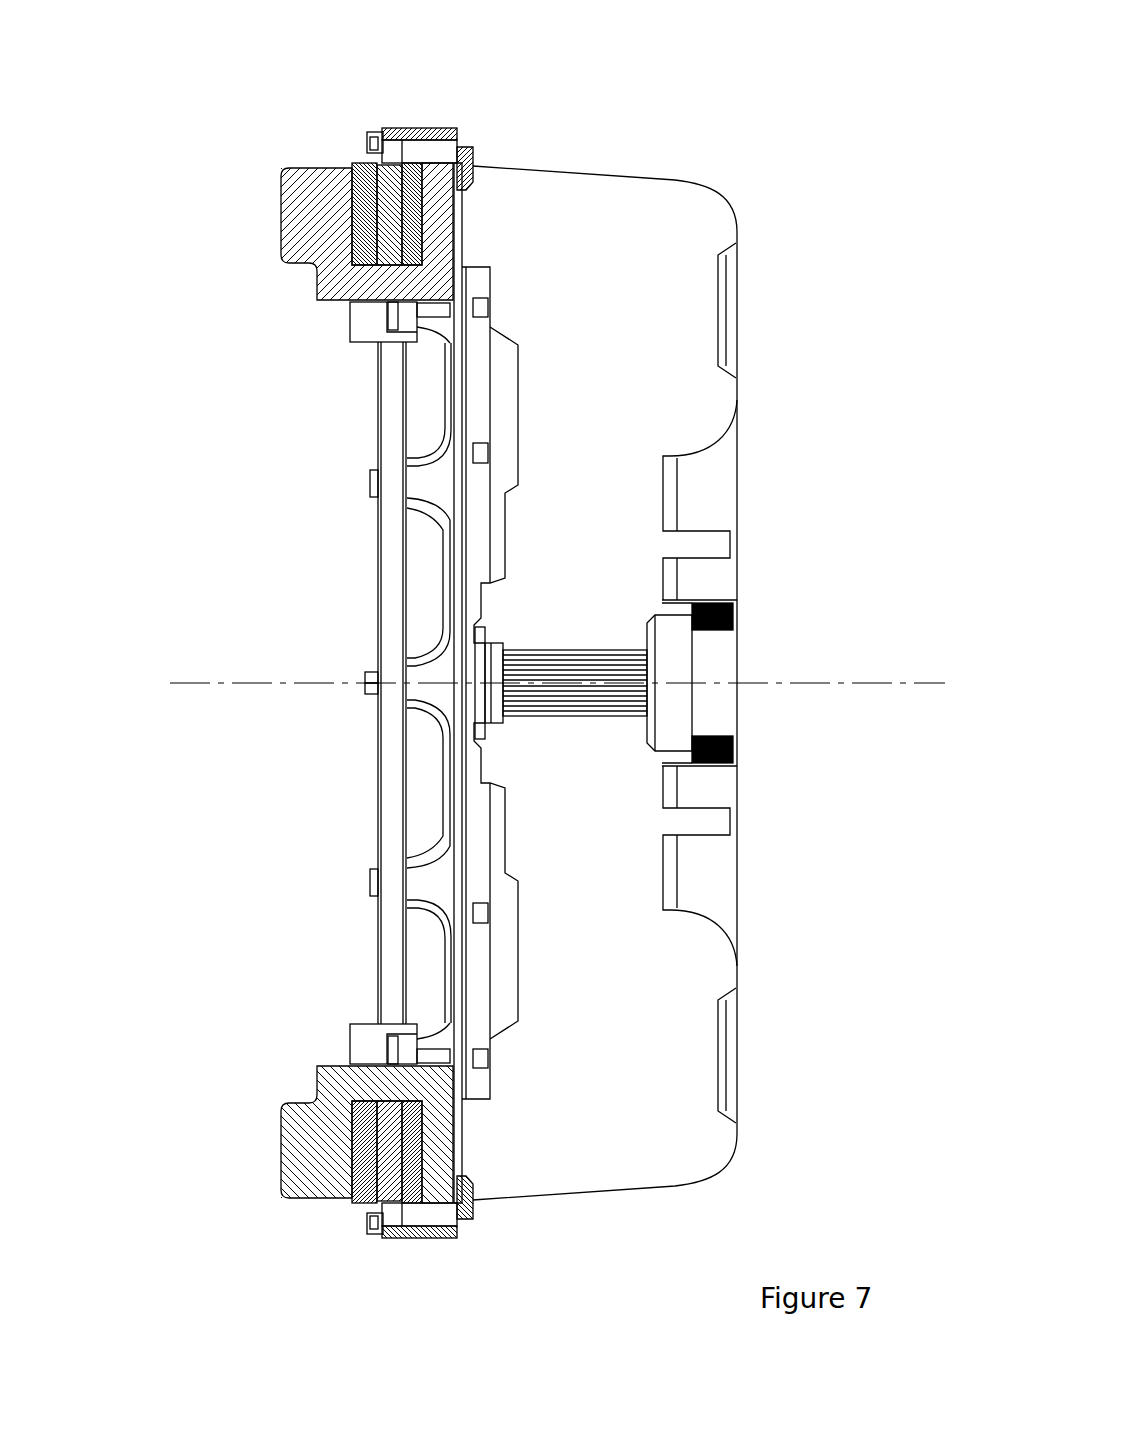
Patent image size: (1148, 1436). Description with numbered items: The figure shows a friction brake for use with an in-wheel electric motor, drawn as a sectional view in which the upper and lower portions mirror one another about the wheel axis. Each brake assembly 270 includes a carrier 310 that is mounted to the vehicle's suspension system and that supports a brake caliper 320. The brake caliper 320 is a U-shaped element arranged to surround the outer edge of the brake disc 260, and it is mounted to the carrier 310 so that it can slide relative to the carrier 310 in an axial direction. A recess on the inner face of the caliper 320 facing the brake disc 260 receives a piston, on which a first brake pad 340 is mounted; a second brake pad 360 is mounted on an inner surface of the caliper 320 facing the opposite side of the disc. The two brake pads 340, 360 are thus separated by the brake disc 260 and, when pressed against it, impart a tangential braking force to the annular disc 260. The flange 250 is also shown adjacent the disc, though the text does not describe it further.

The retaining flange 250 is at (468, 150).
The brake disc 260 is at (373, 132).
The brake assembly 270 is at (226, 275).
The carrier 310 is at (373, 318).
The brake caliper 320 is at (303, 208).
The first brake pad 340 is at (363, 205).
The second brake pad 360 is at (387, 197).